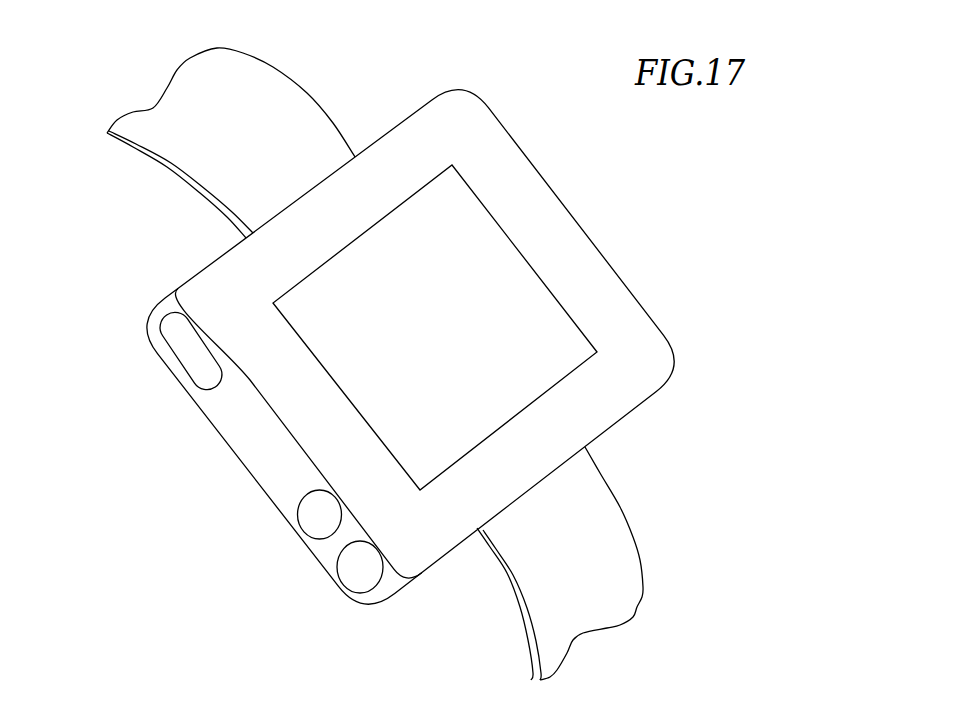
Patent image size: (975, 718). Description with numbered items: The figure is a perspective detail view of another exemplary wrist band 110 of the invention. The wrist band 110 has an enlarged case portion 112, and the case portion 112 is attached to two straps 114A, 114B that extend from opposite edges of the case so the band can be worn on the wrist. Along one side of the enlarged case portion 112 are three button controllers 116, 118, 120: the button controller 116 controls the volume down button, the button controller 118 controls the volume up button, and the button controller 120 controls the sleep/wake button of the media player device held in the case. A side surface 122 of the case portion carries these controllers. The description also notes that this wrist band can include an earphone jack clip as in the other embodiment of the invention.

The wrist band 110 is at (389, 360).
The enlarged case portion 112 is at (590, 237).
The strap 114A is at (275, 100).
The strap 114B is at (605, 508).
The button controller 116 is at (353, 566).
The button controller 118 is at (320, 515).
The button controller 120 is at (195, 353).
The side surface of housing 122 is at (258, 435).